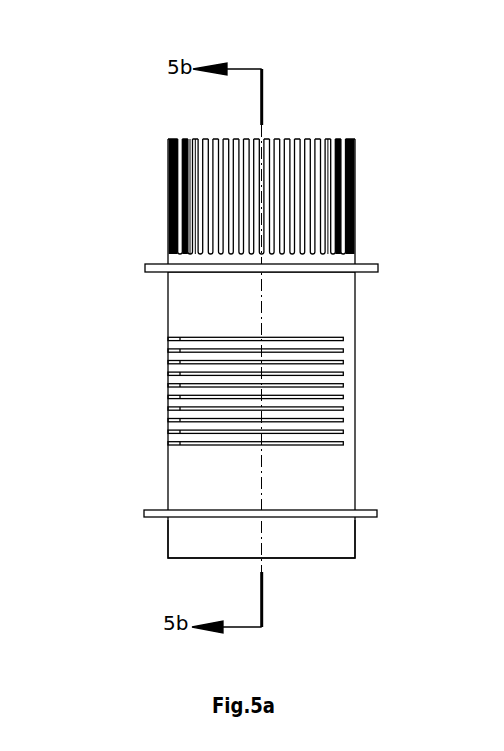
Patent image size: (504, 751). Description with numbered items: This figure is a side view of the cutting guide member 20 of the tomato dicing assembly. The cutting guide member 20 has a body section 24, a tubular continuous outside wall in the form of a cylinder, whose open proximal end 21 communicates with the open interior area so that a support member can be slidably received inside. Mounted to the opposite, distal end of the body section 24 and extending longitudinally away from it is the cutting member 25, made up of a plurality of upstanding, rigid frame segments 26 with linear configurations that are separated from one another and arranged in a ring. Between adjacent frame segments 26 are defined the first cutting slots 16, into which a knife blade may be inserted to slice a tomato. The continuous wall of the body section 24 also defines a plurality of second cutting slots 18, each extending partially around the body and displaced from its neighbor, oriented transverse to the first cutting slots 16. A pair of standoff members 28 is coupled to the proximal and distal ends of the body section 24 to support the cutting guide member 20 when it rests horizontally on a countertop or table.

The first cutting slots 16 is at (302, 167).
The second cutting slots 18 is at (175, 381).
The cutting guide member 20 is at (244, 352).
The open proximal end 21 is at (333, 558).
The body section 24 is at (188, 308).
The cutting member 25 is at (324, 167).
The frame segments 26 is at (303, 139).
The standoff members 28 is at (378, 266).